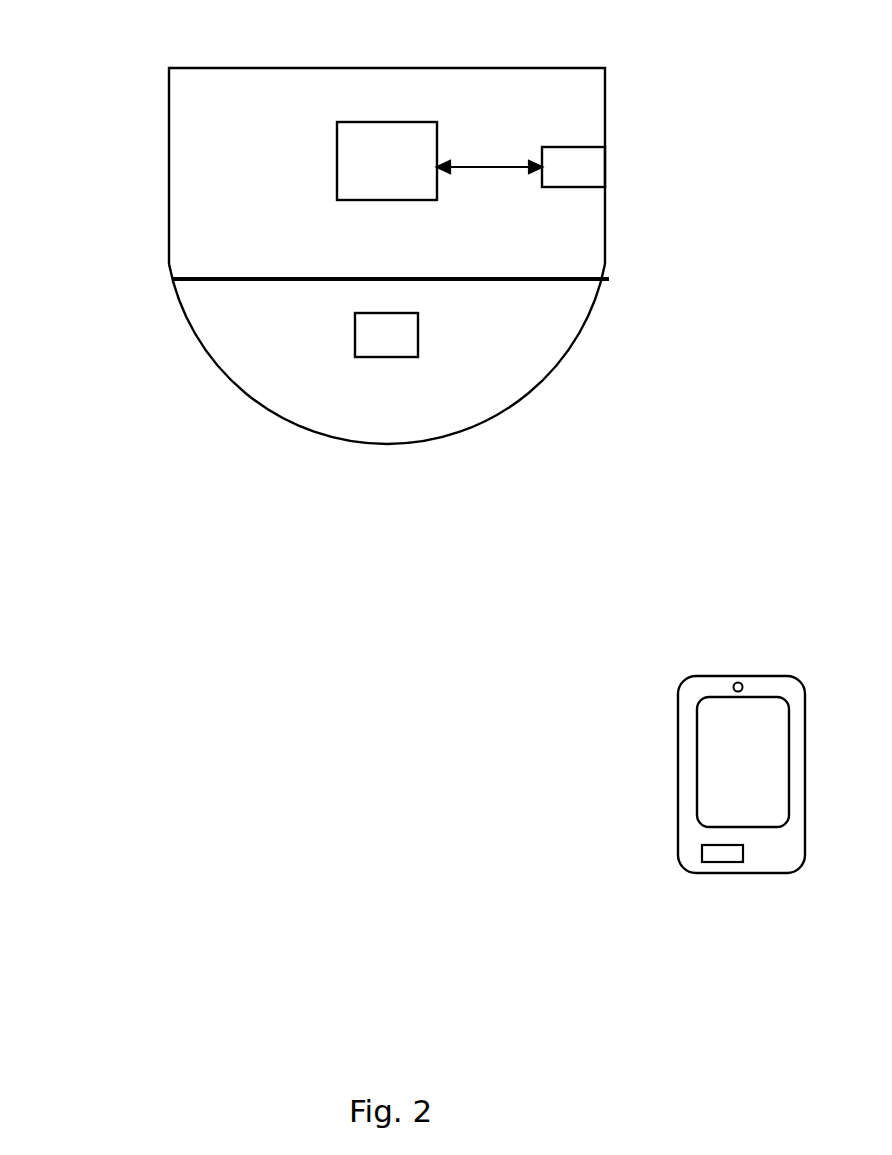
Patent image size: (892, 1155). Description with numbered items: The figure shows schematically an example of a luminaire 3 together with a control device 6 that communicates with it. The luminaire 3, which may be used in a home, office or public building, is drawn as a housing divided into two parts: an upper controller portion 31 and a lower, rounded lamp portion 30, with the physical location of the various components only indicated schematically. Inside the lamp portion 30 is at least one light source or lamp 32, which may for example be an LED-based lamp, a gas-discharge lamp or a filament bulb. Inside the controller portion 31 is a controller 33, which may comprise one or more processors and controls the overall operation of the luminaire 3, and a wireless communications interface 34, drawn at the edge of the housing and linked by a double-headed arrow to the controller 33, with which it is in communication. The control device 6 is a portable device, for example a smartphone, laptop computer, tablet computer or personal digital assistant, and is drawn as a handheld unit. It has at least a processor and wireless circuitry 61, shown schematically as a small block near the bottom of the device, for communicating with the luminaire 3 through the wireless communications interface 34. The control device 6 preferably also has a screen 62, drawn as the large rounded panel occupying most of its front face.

The luminaire 3 is at (382, 225).
The lamp portion 30 is at (577, 347).
The controller portion 31 is at (607, 208).
The lamp 32 is at (355, 330).
The controller 33 is at (382, 122).
The wireless communications interface 34 is at (575, 147).
The control device 6 is at (686, 793).
The wireless circuitry 61 is at (700, 860).
The screen 62 is at (714, 743).